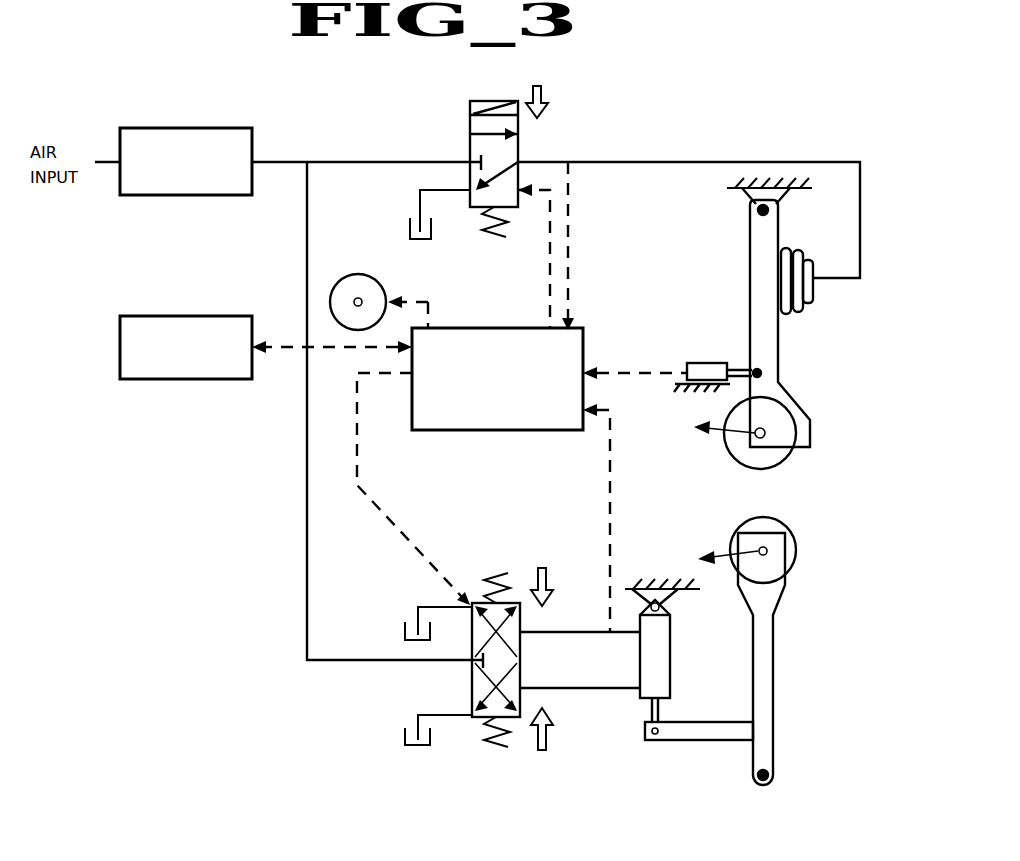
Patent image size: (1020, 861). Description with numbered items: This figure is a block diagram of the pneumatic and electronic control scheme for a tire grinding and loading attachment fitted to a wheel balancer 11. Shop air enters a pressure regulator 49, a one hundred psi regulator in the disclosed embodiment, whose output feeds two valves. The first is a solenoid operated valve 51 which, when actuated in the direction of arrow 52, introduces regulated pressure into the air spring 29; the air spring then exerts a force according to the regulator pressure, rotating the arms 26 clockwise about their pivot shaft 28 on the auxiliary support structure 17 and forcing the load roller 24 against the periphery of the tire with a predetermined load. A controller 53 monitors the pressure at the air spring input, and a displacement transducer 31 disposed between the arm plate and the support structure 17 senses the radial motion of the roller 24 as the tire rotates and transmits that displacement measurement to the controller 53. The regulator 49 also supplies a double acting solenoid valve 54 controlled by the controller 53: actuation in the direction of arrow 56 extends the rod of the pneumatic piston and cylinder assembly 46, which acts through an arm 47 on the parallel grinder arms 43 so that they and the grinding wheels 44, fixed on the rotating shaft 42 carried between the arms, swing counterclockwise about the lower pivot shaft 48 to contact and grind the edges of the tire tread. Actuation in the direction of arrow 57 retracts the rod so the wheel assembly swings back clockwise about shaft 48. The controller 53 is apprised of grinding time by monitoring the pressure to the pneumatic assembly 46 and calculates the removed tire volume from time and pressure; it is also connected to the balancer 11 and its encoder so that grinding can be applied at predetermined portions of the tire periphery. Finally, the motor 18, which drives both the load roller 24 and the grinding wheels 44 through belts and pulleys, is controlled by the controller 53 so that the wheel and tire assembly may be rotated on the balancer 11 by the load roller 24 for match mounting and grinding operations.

The wheel balancer 11 is at (178, 316).
The auxiliary support structure 17 is at (745, 200).
The motor 18 is at (366, 274).
The load roller 24 is at (790, 455).
The arms 26 is at (795, 402).
The pivot shaft 28 is at (757, 212).
The air spring 29 is at (800, 312).
The displacement transducer 31 is at (710, 363).
The shaft 42 is at (768, 556).
The grinder arms 43 is at (775, 658).
The grinding wheels 44 is at (797, 542).
The pneumatic piston and cylinder assembly 46 is at (672, 660).
The arm 47 is at (700, 740).
The shaft 48 is at (768, 780).
The pressure regulator 49 is at (210, 128).
The solenoid operated valve 51 is at (520, 140).
The arrow 52 is at (545, 95).
The controller 53 is at (500, 432).
The double acting solenoid valve 54 is at (522, 664).
The arrow 56 is at (548, 573).
The arrow 57 is at (552, 737).